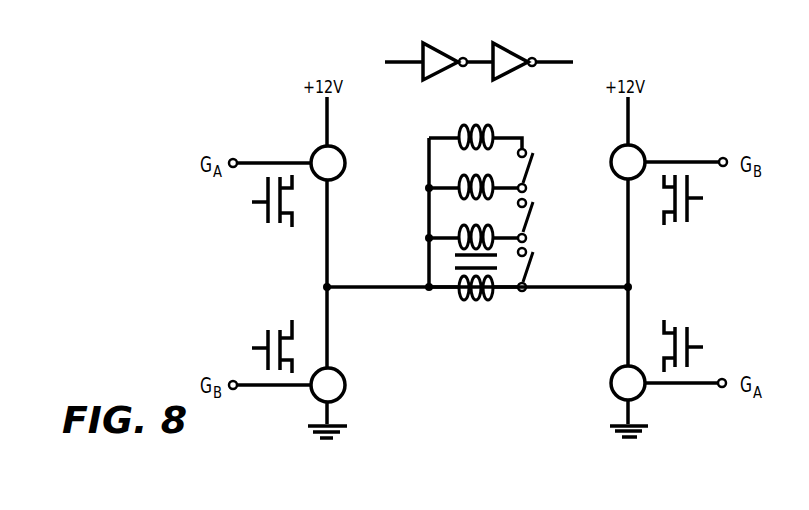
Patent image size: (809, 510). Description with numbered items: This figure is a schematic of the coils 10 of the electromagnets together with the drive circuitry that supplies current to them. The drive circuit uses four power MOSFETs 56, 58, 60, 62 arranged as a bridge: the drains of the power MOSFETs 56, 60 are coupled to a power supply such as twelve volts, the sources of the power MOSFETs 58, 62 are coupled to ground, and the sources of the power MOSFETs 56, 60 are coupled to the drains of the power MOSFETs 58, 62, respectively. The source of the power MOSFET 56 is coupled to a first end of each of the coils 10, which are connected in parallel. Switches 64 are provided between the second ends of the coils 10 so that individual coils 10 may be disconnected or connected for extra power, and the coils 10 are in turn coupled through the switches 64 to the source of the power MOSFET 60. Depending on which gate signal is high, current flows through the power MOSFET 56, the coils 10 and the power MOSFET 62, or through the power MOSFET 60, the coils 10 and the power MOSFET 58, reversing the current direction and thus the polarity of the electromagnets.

The coils 10 is at (468, 130).
The power MOSFET 56 is at (318, 146).
The power MOSFET 58 is at (315, 402).
The power MOSFET 60 is at (636, 146).
The power MOSFET 62 is at (642, 398).
The switches 64 is at (558, 181).